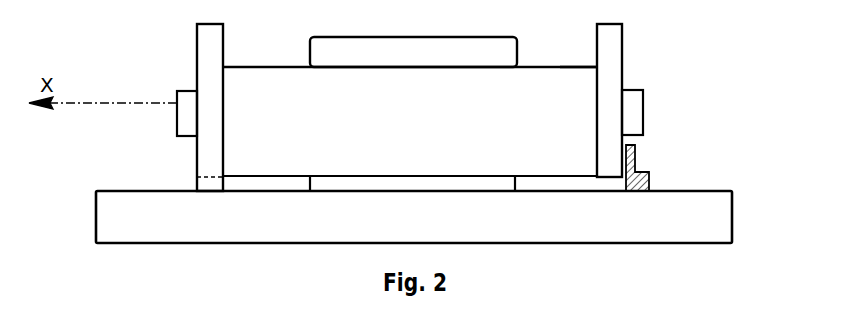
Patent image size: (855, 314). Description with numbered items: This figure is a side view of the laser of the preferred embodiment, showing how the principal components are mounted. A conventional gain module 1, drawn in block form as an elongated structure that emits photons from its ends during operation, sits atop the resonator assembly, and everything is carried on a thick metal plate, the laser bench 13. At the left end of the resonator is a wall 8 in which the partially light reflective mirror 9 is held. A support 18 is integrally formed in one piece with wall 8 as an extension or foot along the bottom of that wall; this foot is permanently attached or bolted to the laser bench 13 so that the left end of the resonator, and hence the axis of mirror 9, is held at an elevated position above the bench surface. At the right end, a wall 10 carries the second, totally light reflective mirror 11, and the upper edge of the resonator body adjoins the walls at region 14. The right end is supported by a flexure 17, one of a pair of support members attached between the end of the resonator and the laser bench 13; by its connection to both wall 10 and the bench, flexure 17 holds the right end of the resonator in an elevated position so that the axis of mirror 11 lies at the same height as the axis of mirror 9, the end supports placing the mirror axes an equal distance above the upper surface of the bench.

The gain module 1 is at (333, 36).
The wall 8 is at (197, 31).
The mirror 9 is at (177, 91).
The wall 10 is at (624, 47).
The second mirror 11 is at (645, 100).
The laser bench 13 is at (113, 191).
The housing top wall 14 is at (575, 66).
The flexure 17 is at (636, 164).
The support 18 is at (197, 178).